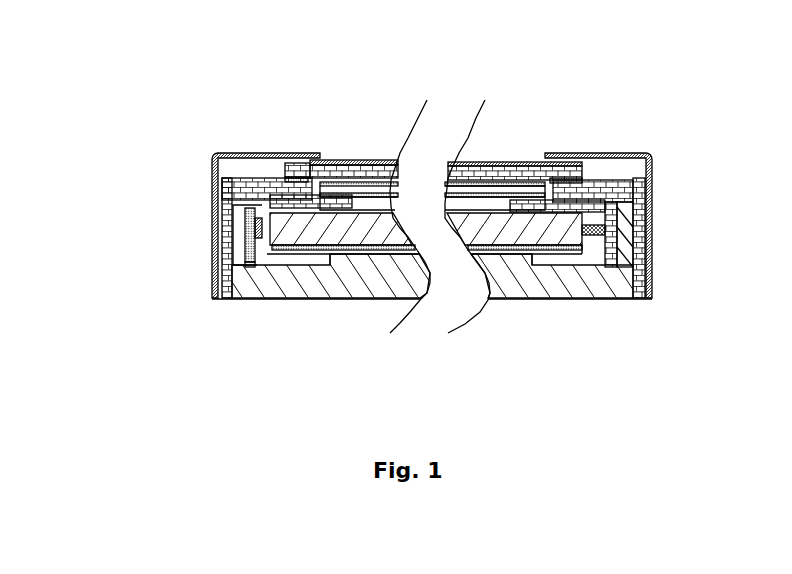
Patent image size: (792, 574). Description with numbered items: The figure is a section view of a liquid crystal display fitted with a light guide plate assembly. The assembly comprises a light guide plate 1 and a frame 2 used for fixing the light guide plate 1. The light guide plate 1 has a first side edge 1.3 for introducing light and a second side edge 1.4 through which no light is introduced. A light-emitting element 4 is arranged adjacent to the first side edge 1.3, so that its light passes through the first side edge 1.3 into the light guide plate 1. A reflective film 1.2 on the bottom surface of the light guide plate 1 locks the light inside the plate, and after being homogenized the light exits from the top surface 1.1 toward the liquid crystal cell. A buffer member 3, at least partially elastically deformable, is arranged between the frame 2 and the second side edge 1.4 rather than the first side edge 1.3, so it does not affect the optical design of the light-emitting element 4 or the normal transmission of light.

The light guide plate 1 is at (492, 130).
The top surface 1.1 is at (458, 111).
The reflective film 1.2 is at (424, 325).
The first side edge 1.3 is at (272, 228).
The second side edge 1.4 is at (506, 314).
The frame 2 is at (494, 172).
The buffer member 3 is at (692, 193).
The light-emitting element 4 is at (373, 182).